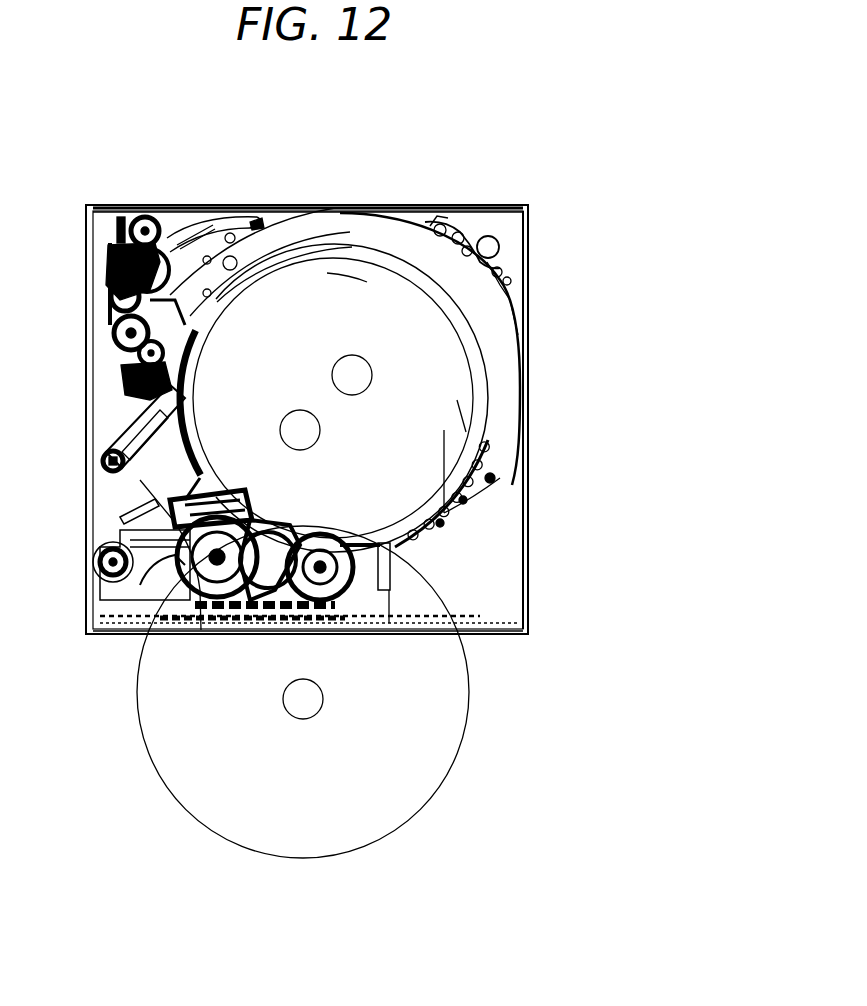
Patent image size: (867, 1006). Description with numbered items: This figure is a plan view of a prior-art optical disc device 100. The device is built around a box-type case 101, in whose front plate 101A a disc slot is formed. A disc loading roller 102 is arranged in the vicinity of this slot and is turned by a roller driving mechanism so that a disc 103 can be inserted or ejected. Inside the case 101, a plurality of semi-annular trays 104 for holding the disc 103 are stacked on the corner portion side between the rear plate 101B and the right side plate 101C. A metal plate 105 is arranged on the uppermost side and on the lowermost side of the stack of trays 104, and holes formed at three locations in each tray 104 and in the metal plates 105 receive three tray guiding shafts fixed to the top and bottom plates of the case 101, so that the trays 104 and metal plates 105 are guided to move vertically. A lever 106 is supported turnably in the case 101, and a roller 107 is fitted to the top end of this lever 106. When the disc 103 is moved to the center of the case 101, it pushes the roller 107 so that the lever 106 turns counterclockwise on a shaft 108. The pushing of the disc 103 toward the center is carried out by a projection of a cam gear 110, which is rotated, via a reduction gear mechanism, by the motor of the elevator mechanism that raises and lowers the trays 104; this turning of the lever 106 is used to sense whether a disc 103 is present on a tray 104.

The optical disc device 100 is at (566, 202).
The case 101 is at (530, 487).
The front plate 101A is at (507, 635).
The rear plate 101B is at (481, 207).
The right side plate 101C is at (530, 385).
The disc loading roller 102 is at (473, 618).
The disc 103 is at (137, 702).
The semi-annular tray 104 is at (397, 262).
The metal plate 105 is at (348, 272).
The lever 106 is at (118, 445).
The roller 107 is at (188, 378).
The shaft 108 is at (104, 466).
The cam gear 110 is at (500, 247).